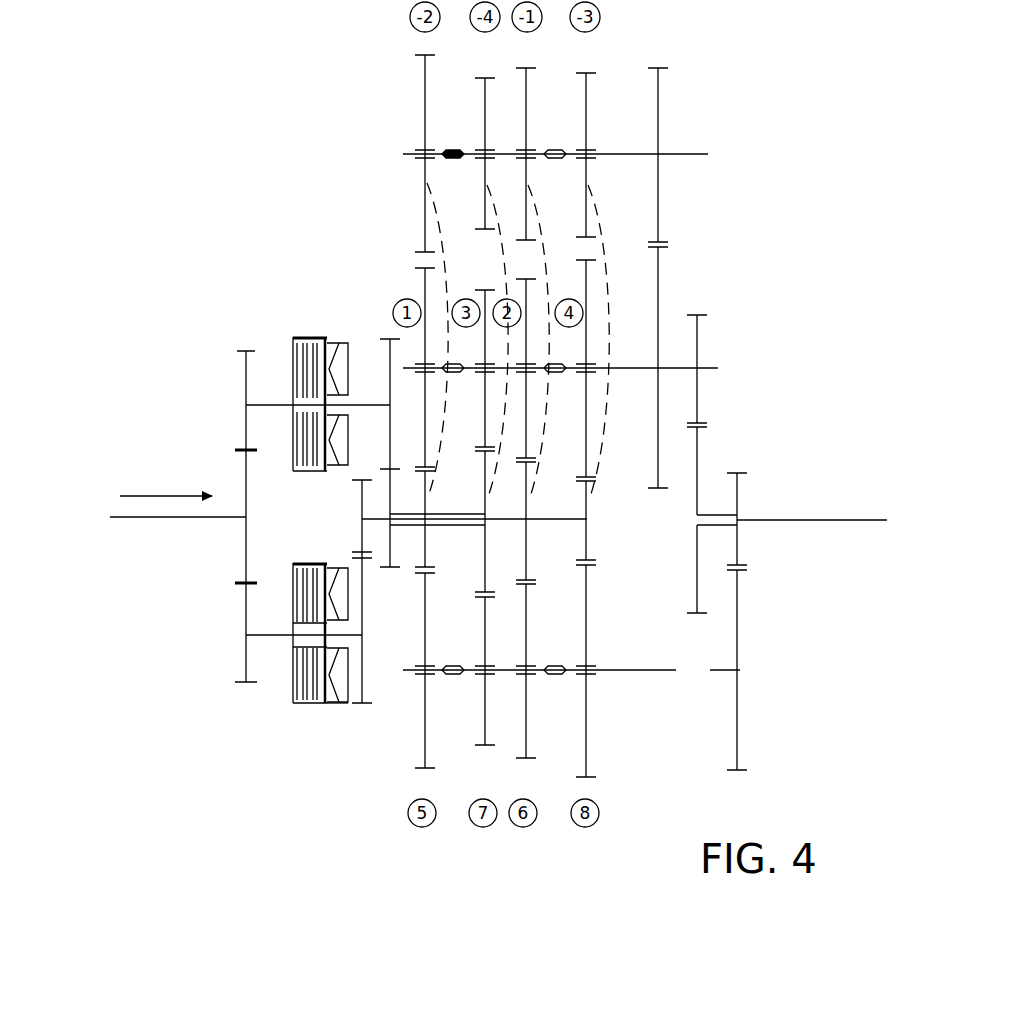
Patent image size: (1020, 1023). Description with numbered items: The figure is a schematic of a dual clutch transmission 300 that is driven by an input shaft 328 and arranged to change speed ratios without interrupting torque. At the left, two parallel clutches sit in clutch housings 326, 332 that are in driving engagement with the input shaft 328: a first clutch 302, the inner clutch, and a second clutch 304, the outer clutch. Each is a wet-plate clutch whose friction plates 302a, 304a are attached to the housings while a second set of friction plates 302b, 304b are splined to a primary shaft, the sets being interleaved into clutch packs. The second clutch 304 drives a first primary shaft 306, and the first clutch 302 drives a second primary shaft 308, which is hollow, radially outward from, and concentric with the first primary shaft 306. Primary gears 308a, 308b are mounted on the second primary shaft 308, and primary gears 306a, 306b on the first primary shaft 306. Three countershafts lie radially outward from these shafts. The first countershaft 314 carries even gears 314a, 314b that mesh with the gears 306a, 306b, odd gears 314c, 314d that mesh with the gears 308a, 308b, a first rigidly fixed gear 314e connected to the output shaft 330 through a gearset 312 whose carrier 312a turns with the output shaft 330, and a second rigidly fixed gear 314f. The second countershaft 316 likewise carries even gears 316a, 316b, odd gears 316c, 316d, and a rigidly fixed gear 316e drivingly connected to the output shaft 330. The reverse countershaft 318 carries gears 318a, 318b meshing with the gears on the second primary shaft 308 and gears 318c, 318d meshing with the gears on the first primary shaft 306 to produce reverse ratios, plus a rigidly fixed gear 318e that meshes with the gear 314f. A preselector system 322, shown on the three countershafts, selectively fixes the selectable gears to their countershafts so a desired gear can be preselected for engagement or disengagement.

The dual clutch transmission 300 is at (96, 190).
The first clutch 302 is at (306, 385).
The friction plates 302a is at (298, 436).
The friction plates 302b is at (298, 377).
The second clutch 304 is at (304, 616).
The friction plates 304a is at (298, 656).
The friction plates 304b is at (295, 678).
The first primary shaft 306 is at (487, 591).
The primary gear 306a is at (578, 520).
The primary gear 306b is at (529, 521).
The second primary shaft 308 is at (423, 476).
The primary gear 308a is at (473, 521).
The primary gear 308b is at (414, 519).
The gearset 312 is at (703, 520).
The carrier 312a is at (720, 498).
The first countershaft 314 is at (560, 368).
The even gear 314a is at (585, 368).
The even gear 314b is at (531, 368).
The odd gear 314c is at (470, 368).
The odd gear 314d is at (410, 367).
The first rigidly fixed gear 314e is at (705, 369).
The second rigidly fixed gear 314f is at (654, 367).
The second countershaft 316 is at (571, 670).
The even gear 316a is at (581, 671).
The even gear 316b is at (525, 671).
The odd gear 316c is at (479, 671).
The odd gear 316d is at (420, 670).
The first rigidly fixed gear 316e is at (733, 670).
The reverse countershaft 318 is at (573, 154).
The even reverse gear 318a is at (420, 153).
The even reverse gear 318b is at (476, 153).
The odd reverse gear 318c is at (534, 154).
The odd reverse gear 318d is at (596, 155).
The first rigidly fixed gear 318e is at (667, 155).
The preselector system 322 is at (449, 152).
The clutch housing 326 is at (288, 344).
The input shaft 328 is at (146, 514).
The output shaft 330 is at (858, 500).
The clutch housing 332 is at (332, 708).